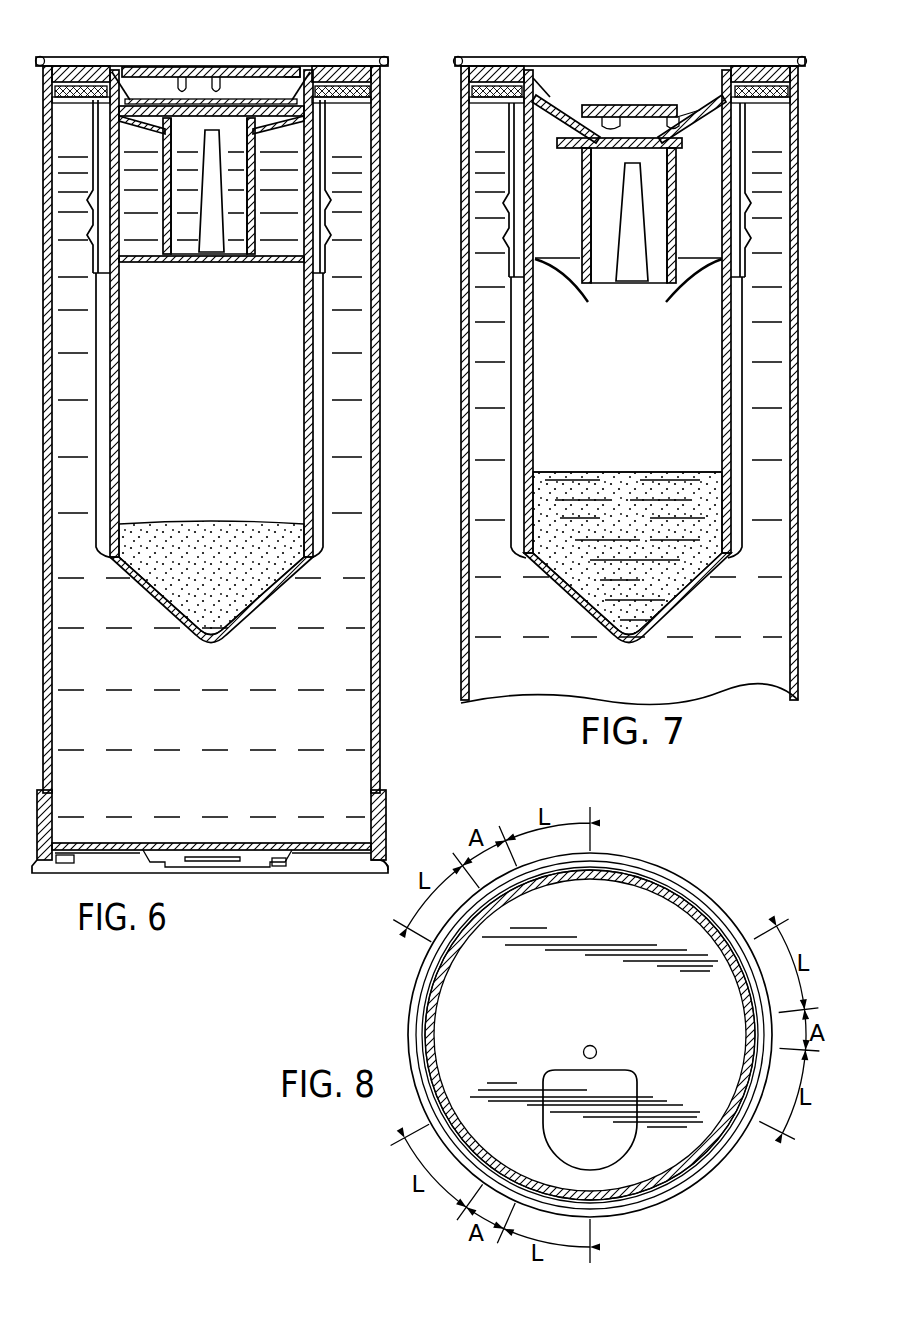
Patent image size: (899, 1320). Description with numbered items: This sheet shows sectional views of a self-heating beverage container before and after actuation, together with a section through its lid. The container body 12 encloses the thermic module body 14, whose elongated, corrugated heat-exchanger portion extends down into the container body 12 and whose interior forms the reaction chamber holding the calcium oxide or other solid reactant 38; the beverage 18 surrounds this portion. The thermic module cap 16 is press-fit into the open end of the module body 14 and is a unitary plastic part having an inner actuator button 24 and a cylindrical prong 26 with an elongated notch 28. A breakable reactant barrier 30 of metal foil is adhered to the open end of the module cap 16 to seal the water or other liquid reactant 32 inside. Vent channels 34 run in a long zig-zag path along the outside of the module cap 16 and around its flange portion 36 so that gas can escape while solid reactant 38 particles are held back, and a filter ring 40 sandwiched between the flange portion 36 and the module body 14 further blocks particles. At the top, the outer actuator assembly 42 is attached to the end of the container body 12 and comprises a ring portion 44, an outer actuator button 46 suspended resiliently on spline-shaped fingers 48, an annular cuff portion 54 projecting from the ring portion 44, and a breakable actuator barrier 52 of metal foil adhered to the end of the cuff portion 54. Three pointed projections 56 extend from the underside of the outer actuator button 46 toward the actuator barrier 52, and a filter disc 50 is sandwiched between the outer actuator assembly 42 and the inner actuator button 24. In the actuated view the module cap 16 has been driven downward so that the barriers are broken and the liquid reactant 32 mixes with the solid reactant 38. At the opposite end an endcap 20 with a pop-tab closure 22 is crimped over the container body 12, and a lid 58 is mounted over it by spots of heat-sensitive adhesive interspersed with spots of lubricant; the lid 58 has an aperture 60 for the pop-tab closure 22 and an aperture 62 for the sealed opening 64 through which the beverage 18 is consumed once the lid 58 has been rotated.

In FIG. 6, the container body 12 is at (375, 613).
In FIG. 7, the container body 12 is at (462, 537).
In FIG. 8, the container body 12 is at (427, 1028).
In FIG. 6, the thermic module body 14 is at (313, 445).
In FIG. 7, the thermic module body 14 is at (528, 380).
In FIG. 6, the thermic module cap 16 is at (313, 153).
In FIG. 7, the thermic module cap 16 is at (628, 198).
In FIG. 6, the beverage 18 is at (365, 263).
In FIG. 7, the beverage 18 is at (485, 330).
In FIG. 6, the endcap 20 is at (288, 845).
In FIG. 8, the endcap 20 is at (453, 984).
In FIG. 6, the pop-tab closure 22 is at (237, 861).
In FIG. 6, the inner actuator button 24 is at (153, 121).
In FIG. 6, the cylindrical prong 26 is at (165, 217).
In FIG. 7, the cylindrical prong 26 is at (586, 197).
In FIG. 6, the elongated notch 28 is at (212, 240).
In FIG. 7, the elongated notch 28 is at (630, 267).
In FIG. 6, the breakable reactant barrier 30 is at (187, 263).
In FIG. 7, the breakable reactant barrier 30 is at (583, 300).
In FIG. 6, the liquid reactant 32 is at (278, 233).
In FIG. 7, the liquid reactant 32 is at (662, 477).
In FIG. 6, the vent channels 34 is at (80, 104).
In FIG. 7, the vent channels 34 is at (482, 105).
In FIG. 6, the flange portion 36 is at (370, 88).
In FIG. 7, the flange portion 36 is at (783, 90).
In FIG. 6, the solid reactant 38 is at (237, 523).
In FIG. 6, the filter ring 40 is at (83, 108).
In FIG. 7, the filter ring 40 is at (520, 97).
In FIG. 6, the outer actuator assembly 42 is at (375, 62).
In FIG. 7, the outer actuator assembly 42 is at (773, 68).
In FIG. 6, the ring portion 44 is at (297, 93).
In FIG. 7, the ring portion 44 is at (730, 80).
In FIG. 6, the outer actuator button 46 is at (232, 67).
In FIG. 7, the outer actuator button 46 is at (613, 105).
In FIG. 6, the spline-shaped fingers 48 is at (270, 77).
In FIG. 7, the spline-shaped fingers 48 is at (687, 120).
In FIG. 6, the filter disc 50 is at (274, 104).
In FIG. 7, the filter disc 50 is at (573, 143).
In FIG. 6, the breakable actuator barrier 52 is at (280, 96).
In FIG. 7, the breakable actuator barrier 52 is at (705, 115).
In FIG. 6, the annular cuff portion 54 is at (133, 78).
In FIG. 7, the annular cuff portion 54 is at (550, 93).
In FIG. 6, the pointed projections 56 is at (180, 90).
In FIG. 7, the pointed projections 56 is at (652, 120).
In FIG. 6, the lid 58 is at (378, 868).
In FIG. 8, the lid 58 is at (670, 872).
In FIG. 6, the aperture 60 is at (283, 866).
In FIG. 6, the aperture 62 is at (97, 853).
In FIG. 8, the sealed opening 64 is at (627, 1092).